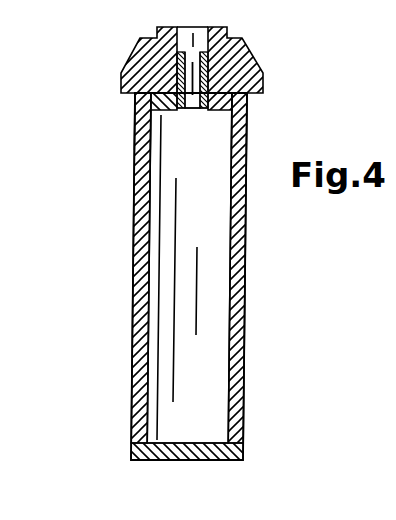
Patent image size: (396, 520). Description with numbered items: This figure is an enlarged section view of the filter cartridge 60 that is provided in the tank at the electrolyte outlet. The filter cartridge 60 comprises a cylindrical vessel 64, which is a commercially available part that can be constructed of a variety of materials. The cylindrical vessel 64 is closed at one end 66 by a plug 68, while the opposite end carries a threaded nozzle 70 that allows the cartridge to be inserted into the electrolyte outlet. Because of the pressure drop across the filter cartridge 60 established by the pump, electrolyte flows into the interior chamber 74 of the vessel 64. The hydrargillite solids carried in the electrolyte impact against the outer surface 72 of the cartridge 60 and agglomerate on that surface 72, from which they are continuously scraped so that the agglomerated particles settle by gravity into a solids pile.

The filter cartridge 60 is at (105, 238).
The cylindrical vessel 64 is at (142, 345).
The end 66 is at (244, 425).
The plug 68 is at (192, 462).
The threaded nozzle 70 is at (177, 73).
The outer surface 72 is at (134, 145).
The interior chamber 74 is at (177, 285).